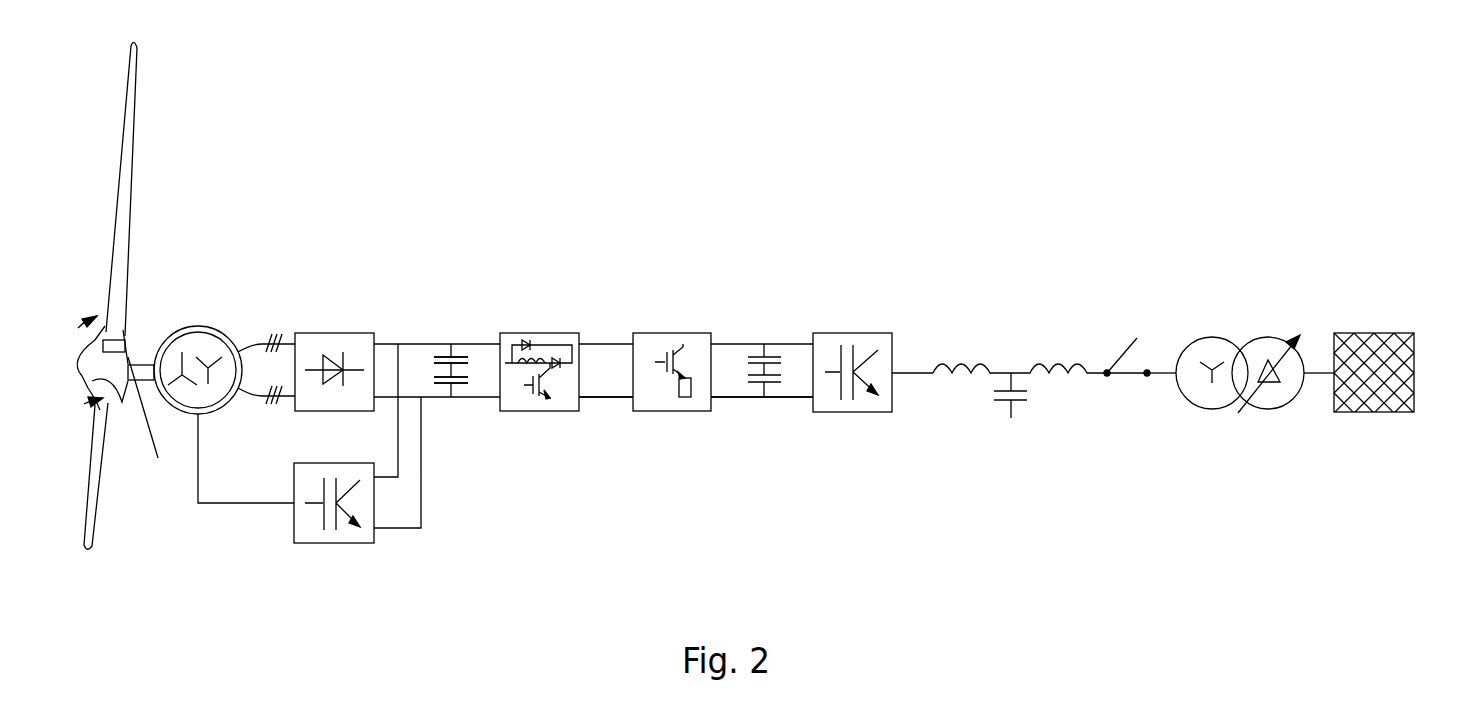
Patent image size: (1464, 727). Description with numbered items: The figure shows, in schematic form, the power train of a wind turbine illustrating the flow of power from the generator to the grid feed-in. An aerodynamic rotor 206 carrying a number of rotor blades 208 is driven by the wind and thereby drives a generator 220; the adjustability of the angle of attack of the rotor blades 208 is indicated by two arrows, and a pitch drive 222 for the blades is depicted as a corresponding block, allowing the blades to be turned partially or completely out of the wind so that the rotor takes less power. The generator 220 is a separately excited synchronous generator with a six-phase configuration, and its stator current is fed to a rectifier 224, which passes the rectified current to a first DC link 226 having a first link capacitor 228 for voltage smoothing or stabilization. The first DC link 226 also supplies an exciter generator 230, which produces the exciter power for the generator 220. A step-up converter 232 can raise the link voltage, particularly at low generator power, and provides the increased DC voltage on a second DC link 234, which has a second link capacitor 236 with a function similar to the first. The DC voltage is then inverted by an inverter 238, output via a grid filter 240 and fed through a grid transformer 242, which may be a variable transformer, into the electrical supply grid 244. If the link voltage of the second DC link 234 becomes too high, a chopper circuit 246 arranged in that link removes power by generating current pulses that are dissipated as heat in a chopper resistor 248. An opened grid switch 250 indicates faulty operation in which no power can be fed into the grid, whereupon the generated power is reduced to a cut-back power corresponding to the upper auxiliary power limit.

The aerodynamic rotor 206 is at (183, 320).
The rotor blades 208 is at (120, 168).
The generator 220 is at (212, 347).
The pitch drive 222 is at (156, 424).
The rectifier 224 is at (338, 333).
The first DC link 226 is at (425, 344).
The first link capacitor 228 is at (465, 370).
The exciter generator 230 is at (323, 543).
The step-up converter 232 is at (545, 333).
The second DC link 234 is at (605, 398).
The second link capacitor 236 is at (803, 340).
The inverter 238 is at (856, 333).
The grid filter 240 is at (994, 322).
The grid transformer 242 is at (1240, 320).
The electrical supply grid 244 is at (1348, 320).
The chopper circuit 246 is at (701, 348).
The chopper resistor 248 is at (677, 385).
The grid switch 250 is at (1124, 397).